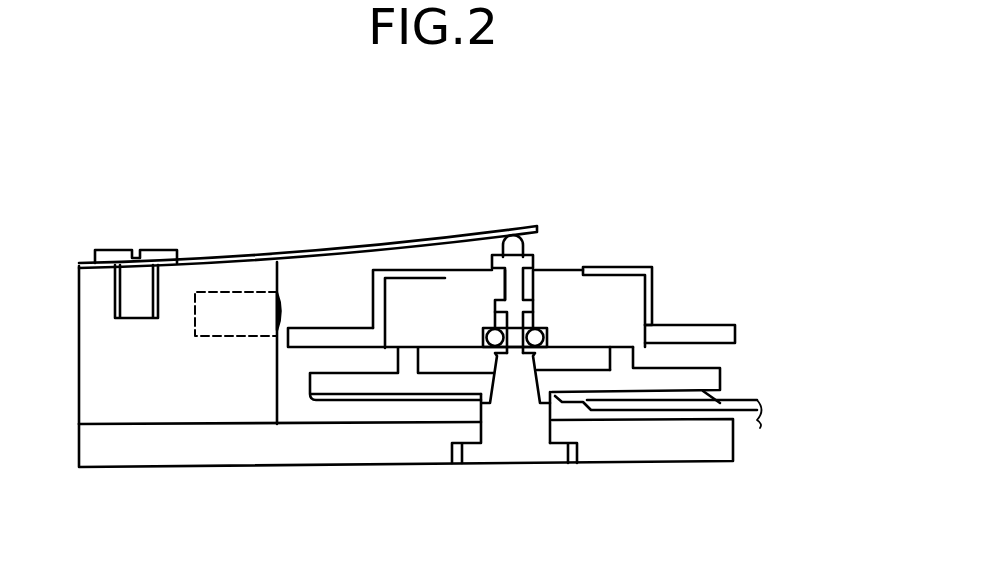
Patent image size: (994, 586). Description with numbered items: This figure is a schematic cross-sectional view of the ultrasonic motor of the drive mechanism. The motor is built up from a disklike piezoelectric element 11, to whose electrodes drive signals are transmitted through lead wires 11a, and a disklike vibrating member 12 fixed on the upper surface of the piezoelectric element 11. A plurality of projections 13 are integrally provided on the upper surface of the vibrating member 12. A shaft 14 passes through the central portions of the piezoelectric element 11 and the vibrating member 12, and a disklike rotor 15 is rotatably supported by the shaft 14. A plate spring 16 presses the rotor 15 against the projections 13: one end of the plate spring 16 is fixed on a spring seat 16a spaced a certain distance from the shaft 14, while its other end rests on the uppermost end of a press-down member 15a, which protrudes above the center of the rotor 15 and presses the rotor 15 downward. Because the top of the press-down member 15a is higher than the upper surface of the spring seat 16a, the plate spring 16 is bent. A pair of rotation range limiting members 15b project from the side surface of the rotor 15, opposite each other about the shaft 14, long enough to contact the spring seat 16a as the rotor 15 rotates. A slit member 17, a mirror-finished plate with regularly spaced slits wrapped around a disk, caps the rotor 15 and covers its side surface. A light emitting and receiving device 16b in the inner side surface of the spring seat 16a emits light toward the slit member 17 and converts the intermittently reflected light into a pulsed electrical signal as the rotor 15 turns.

The piezoelectric element 11 is at (718, 397).
The lead wires 11a is at (765, 410).
The vibrating member 12 is at (697, 378).
The projections 13 is at (407, 363).
The shaft 14 is at (515, 446).
The rotor 15 is at (565, 272).
The press-down member 15a is at (528, 250).
The rotation range limiting members 15b is at (688, 330).
The plate spring 16 is at (360, 247).
The spring seat 16a is at (118, 380).
The light emitting and receiving device 16b is at (238, 315).
The slit member 17 is at (636, 268).